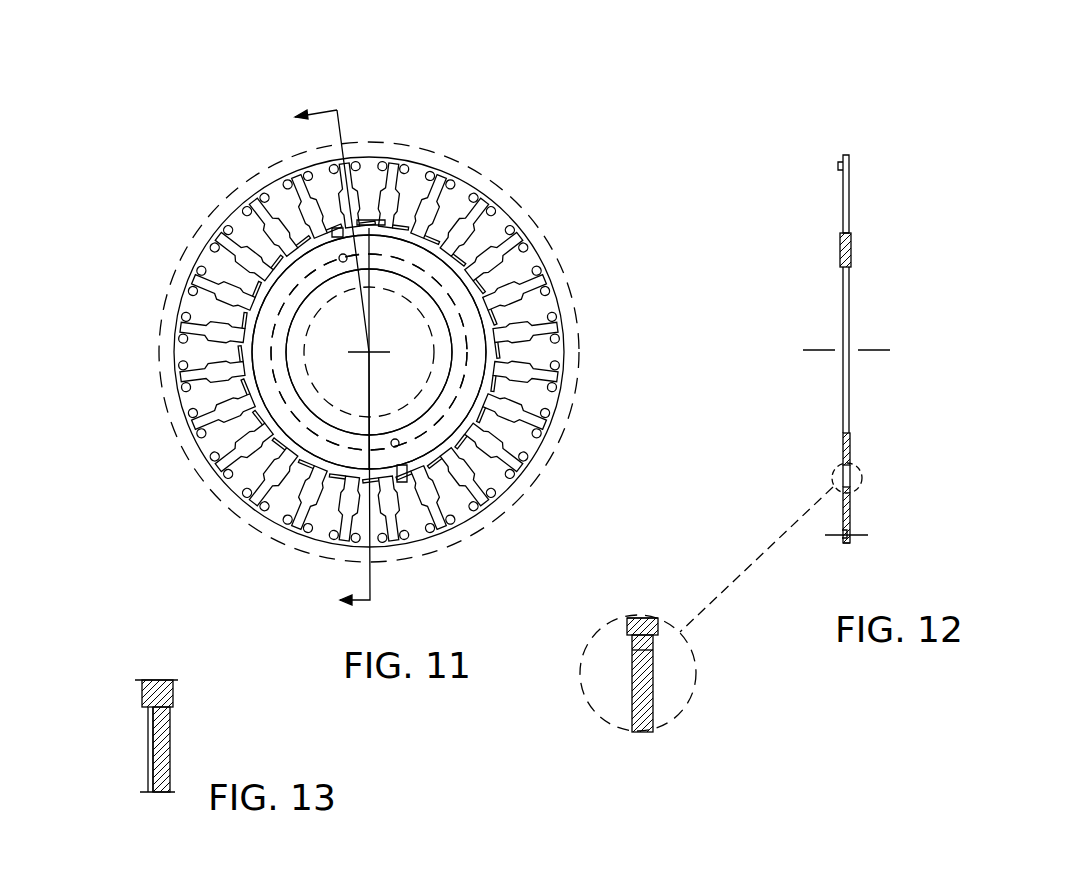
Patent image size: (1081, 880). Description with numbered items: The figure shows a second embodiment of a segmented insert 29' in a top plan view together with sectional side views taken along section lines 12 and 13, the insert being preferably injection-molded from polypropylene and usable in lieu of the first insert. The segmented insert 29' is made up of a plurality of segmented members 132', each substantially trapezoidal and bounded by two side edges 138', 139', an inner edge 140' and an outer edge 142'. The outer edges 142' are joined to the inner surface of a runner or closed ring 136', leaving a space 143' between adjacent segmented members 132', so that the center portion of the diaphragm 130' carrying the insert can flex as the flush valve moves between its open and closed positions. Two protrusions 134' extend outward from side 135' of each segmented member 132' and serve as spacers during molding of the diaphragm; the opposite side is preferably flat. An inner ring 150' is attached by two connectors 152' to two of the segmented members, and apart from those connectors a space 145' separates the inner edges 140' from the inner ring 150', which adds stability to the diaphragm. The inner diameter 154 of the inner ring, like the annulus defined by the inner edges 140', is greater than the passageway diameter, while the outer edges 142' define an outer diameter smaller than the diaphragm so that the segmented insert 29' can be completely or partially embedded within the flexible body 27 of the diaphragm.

The segmented insert 29' is at (319, 238).
The diaphragm 130' is at (369, 284).
The section line 12- 12 is at (326, 351).
The section line 13- 13 is at (382, 490).
The inner diameter 154 is at (312, 292).
The flexible body 27 is at (532, 215).
The side 135' is at (522, 243).
The closed ring 136' is at (493, 397).
The side edge 138' is at (593, 327).
The side edge 139' is at (593, 371).
The outer edge 142' is at (578, 426).
The space 143' is at (523, 477).
The inner edge 140' is at (259, 477).
The segmented member 132' is at (162, 314).
The protrusion 134' is at (157, 327).
The space 145' is at (220, 284).
The inner ring 150' is at (369, 352).
The connector 152' is at (369, 346).